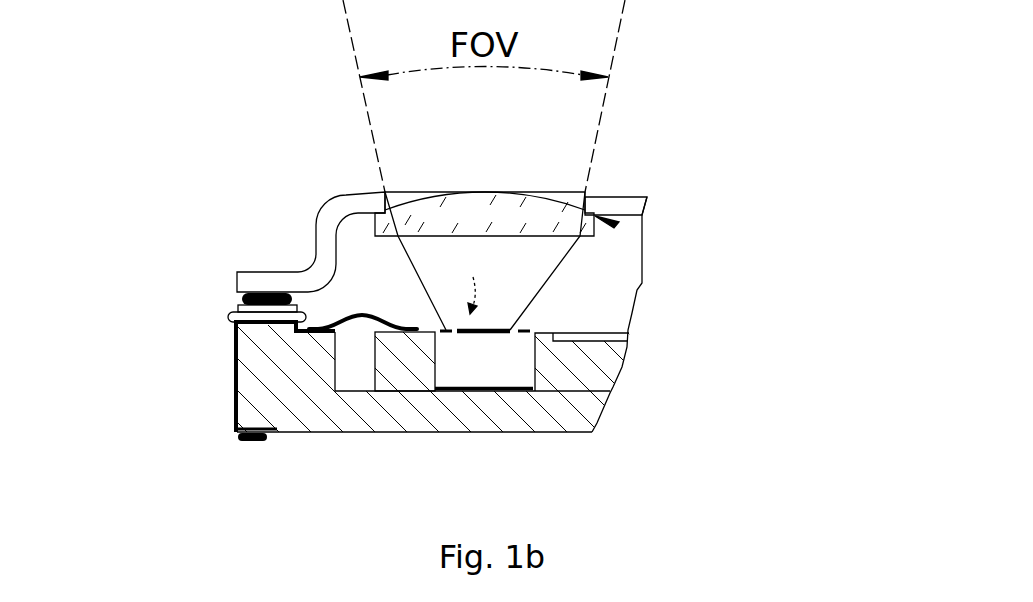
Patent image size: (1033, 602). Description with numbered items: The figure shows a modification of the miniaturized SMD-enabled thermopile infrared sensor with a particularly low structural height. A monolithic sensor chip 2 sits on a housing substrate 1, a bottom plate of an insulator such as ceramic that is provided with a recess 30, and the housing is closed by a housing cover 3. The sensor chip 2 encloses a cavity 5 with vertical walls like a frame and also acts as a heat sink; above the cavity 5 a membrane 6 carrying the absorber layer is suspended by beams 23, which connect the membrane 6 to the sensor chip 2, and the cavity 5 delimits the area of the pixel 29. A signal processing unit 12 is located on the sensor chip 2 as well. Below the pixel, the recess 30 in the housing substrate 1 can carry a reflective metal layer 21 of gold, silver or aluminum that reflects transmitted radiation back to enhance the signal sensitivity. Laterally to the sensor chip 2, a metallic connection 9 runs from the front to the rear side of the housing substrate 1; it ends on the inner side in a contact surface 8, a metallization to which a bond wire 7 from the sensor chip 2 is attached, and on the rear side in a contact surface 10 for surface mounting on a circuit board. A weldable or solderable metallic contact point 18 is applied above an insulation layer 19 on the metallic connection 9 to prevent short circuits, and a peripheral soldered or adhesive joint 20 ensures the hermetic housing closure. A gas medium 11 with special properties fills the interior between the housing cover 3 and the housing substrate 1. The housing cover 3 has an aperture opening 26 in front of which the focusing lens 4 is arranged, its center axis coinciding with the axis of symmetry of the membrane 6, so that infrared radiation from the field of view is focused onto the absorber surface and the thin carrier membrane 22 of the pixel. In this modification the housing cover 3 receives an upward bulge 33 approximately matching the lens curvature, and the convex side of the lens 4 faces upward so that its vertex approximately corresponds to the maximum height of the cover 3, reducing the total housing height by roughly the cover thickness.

The housing substrate 1 is at (573, 412).
The sensor chip 2 is at (597, 375).
The housing cover 3 is at (640, 197).
The focusing lens 4 is at (500, 210).
The cavity 5 is at (457, 360).
The membrane 6 is at (488, 335).
The bond wire 7 is at (353, 312).
The contact surface 8 is at (236, 336).
The metallic connection 9 is at (236, 367).
The contact surface for surface mounting 10 is at (240, 440).
The gas medium 11 is at (357, 250).
The signal processing unit 12 is at (600, 335).
The metallic contact point 18 is at (247, 305).
The insulation layer 19 is at (228, 317).
The soldered or adhesive joint 20 is at (240, 295).
The reflective metal layer 21 is at (475, 390).
The thin carrier membrane 22 is at (512, 330).
The beams 23 is at (522, 332).
The aperture opening 26 is at (385, 208).
The pixel 29 is at (467, 281).
The recess 30 is at (358, 357).
The bulge 33 is at (619, 223).